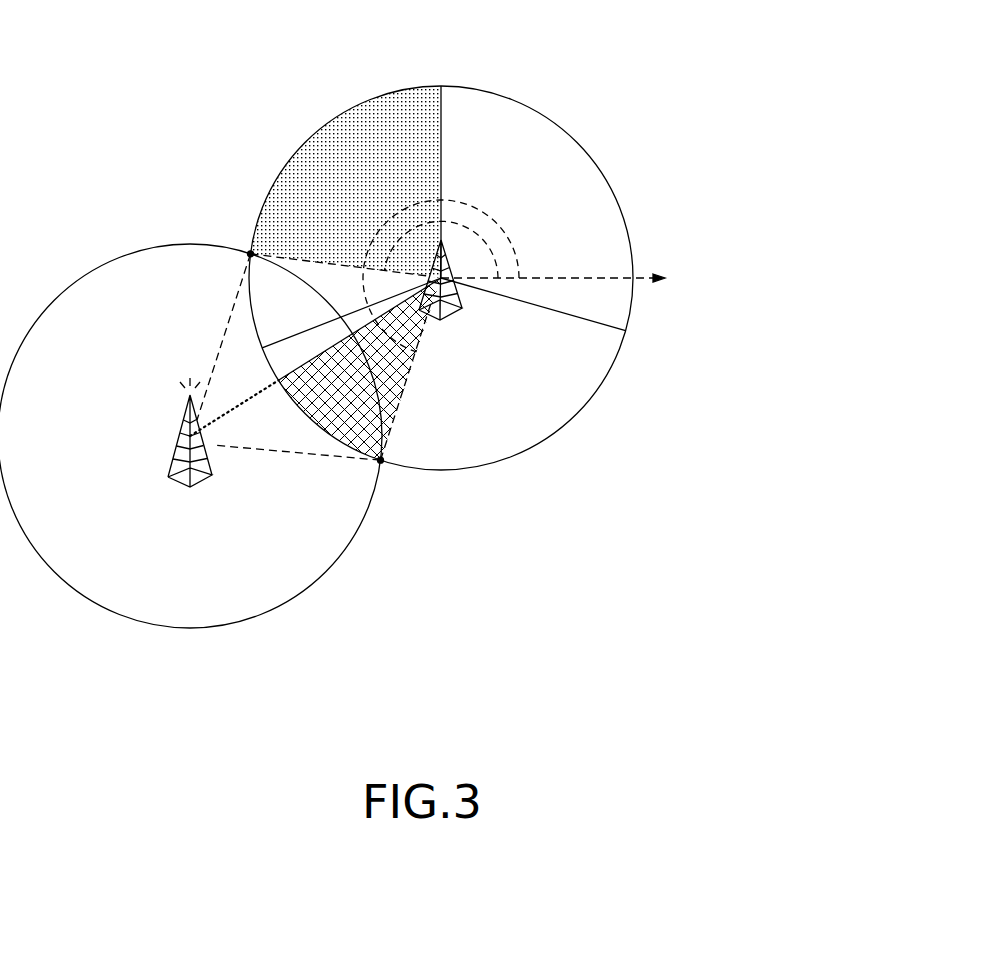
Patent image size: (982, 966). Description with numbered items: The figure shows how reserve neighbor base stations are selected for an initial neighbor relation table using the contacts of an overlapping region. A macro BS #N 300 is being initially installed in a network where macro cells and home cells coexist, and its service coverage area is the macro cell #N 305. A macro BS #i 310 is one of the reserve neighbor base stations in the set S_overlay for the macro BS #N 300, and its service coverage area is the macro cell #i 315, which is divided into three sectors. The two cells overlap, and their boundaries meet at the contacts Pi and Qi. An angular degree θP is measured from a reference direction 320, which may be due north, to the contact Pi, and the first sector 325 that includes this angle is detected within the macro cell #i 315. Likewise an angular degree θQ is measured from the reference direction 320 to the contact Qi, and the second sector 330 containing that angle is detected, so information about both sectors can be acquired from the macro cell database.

The macro BS #N 300 is at (177, 438).
The macro cell #N 305 is at (92, 272).
The macro BS #i 310 is at (456, 315).
The macro cell #i 315 is at (513, 100).
The reference direction 320 is at (613, 282).
The sector #1 325 is at (323, 163).
The sector #2 330 is at (398, 386).